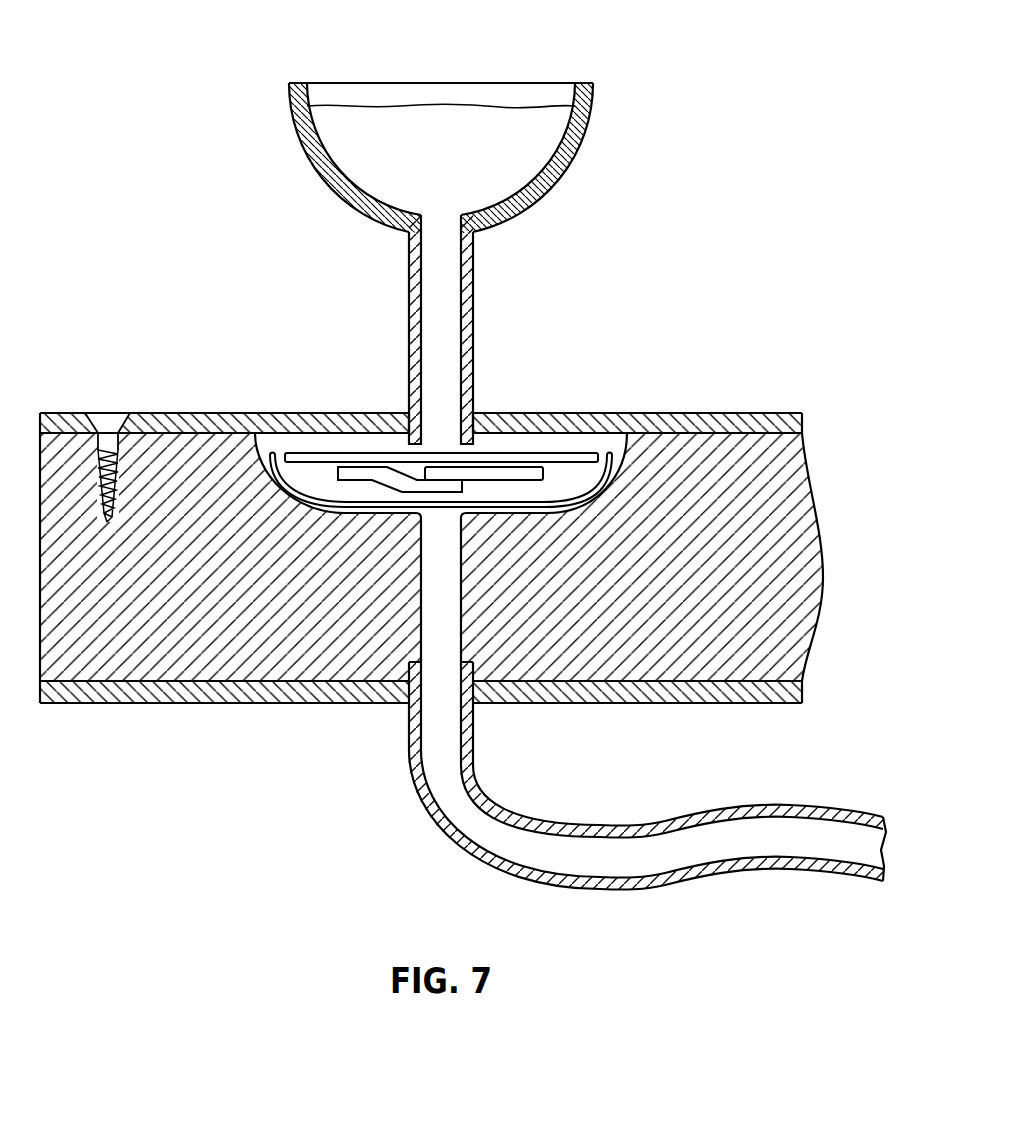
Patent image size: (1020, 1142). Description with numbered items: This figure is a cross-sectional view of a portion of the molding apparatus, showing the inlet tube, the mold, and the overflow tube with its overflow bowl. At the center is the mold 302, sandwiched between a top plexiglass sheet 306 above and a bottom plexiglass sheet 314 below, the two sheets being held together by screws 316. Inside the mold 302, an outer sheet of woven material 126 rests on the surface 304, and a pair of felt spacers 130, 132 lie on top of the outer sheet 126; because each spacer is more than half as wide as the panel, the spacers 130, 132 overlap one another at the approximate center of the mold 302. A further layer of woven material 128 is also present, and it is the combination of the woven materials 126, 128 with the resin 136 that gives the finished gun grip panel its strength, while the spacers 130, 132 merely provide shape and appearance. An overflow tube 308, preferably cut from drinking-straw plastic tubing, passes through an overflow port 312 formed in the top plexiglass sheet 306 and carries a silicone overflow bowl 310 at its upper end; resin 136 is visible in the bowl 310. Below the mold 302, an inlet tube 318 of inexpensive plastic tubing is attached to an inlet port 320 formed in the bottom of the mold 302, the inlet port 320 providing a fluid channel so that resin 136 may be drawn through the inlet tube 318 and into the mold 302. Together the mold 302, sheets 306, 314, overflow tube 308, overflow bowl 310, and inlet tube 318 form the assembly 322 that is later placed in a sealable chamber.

The resin 136 is at (407, 122).
The overflow bowl 310 is at (315, 170).
The overflow tube 308 is at (409, 295).
The assembly 322 is at (662, 362).
The screw 316 is at (108, 412).
The top plexiglass sheet 306 is at (206, 412).
The overflow port 312 is at (409, 413).
The woven material 128 is at (562, 455).
The surface 304 is at (278, 492).
The outer sheet of woven material 126 is at (592, 500).
The felt spacer 130 is at (366, 483).
The felt spacer 132 is at (522, 482).
The inlet port 320 is at (428, 628).
The mold 302 is at (788, 638).
The bottom plexiglass sheet 314 is at (172, 704).
The inlet tube 318 is at (785, 872).